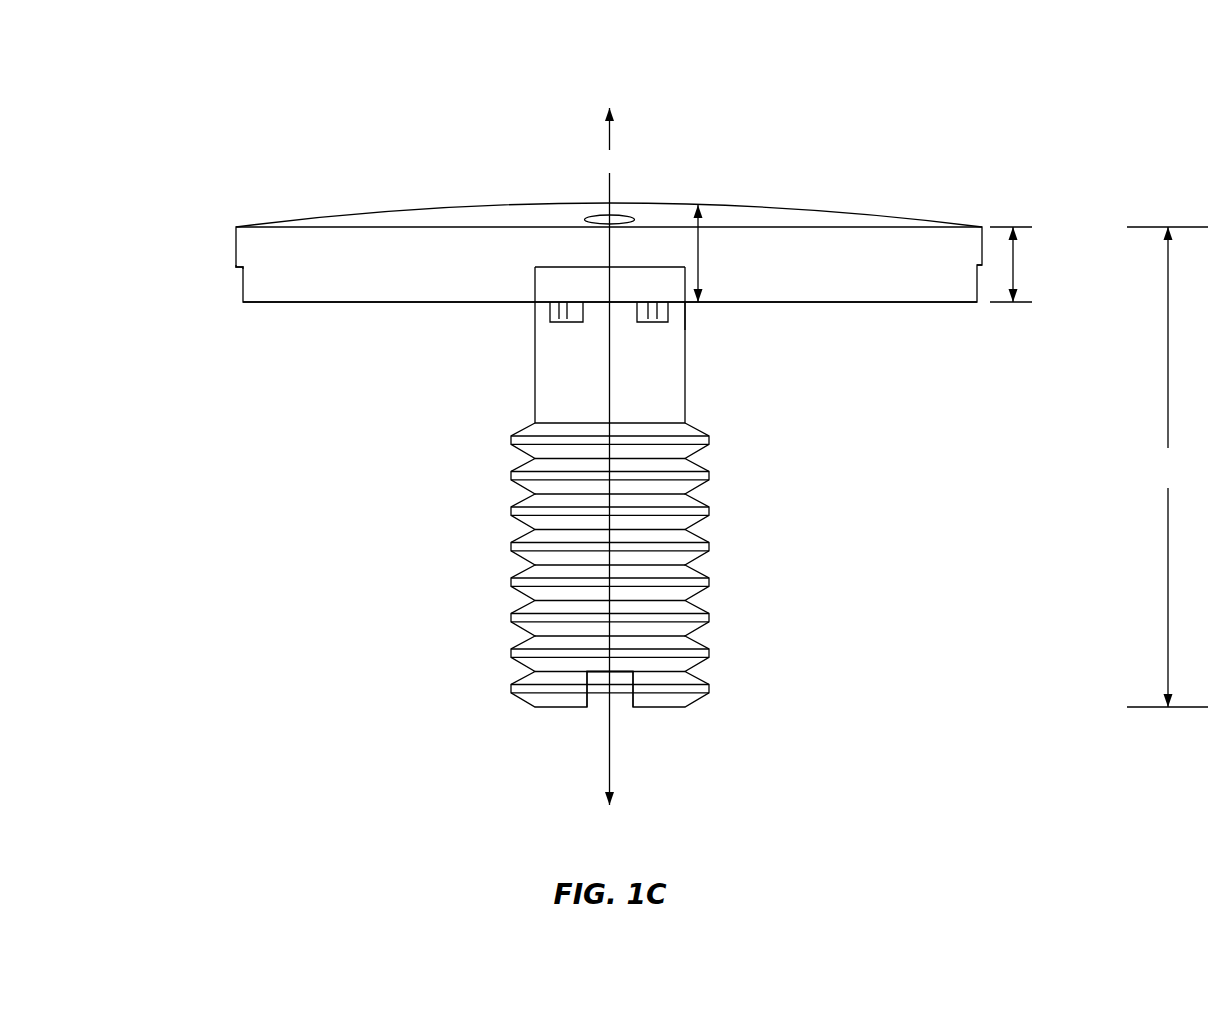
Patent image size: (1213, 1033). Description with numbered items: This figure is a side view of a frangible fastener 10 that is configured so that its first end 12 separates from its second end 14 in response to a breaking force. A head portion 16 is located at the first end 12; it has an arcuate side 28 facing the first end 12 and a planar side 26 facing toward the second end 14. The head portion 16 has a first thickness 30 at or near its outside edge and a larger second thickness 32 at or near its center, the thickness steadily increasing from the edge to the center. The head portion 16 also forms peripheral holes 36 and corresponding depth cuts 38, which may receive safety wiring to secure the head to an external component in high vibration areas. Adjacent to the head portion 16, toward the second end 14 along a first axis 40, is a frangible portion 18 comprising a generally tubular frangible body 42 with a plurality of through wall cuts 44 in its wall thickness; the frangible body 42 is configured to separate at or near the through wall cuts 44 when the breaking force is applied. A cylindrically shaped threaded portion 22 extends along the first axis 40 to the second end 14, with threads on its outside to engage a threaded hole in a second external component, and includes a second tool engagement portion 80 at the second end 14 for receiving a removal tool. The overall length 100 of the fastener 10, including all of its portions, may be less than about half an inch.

The frangible fastener 10 is at (617, 457).
The first end 12 is at (614, 90).
The second end 14 is at (612, 822).
The head portion 16 is at (617, 250).
The frangible portion 18 is at (596, 345).
The threaded portion 22 is at (645, 587).
The planar side 26 is at (866, 303).
The arcuate side 28 is at (484, 221).
The first thickness 30 is at (1014, 262).
The second thickness 32 is at (700, 256).
The peripheral holes 36 is at (617, 214).
The depth cuts 38 is at (236, 286).
The first axis 40 is at (609, 462).
The frangible body 42 is at (686, 311).
The through wall cuts 44 is at (656, 318).
The second tool engagement portion 80 is at (600, 706).
The overall length 100 is at (1167, 467).